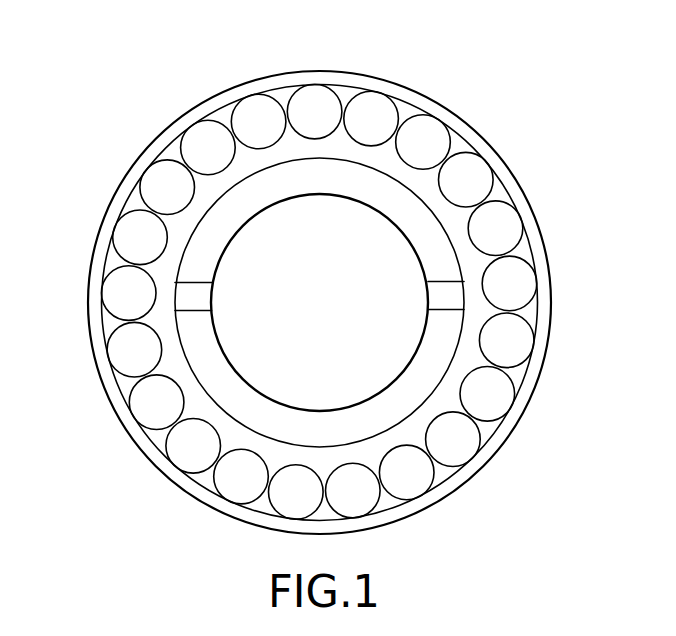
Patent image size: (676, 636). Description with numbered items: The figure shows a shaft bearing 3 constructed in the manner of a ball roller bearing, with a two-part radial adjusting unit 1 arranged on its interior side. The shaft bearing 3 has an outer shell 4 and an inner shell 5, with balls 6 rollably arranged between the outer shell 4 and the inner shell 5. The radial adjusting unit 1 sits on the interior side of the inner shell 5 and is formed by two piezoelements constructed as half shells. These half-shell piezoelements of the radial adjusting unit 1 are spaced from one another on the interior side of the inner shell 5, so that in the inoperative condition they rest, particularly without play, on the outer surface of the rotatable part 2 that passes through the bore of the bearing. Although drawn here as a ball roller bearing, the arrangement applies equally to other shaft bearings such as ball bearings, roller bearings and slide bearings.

The radial adjusting unit 1 is at (443, 263).
The rotatable part 2 is at (321, 334).
The shaft bearing 3 is at (120, 116).
The outer shell 4 is at (343, 78).
The inner shell 5 is at (427, 192).
The balls 6 is at (438, 138).